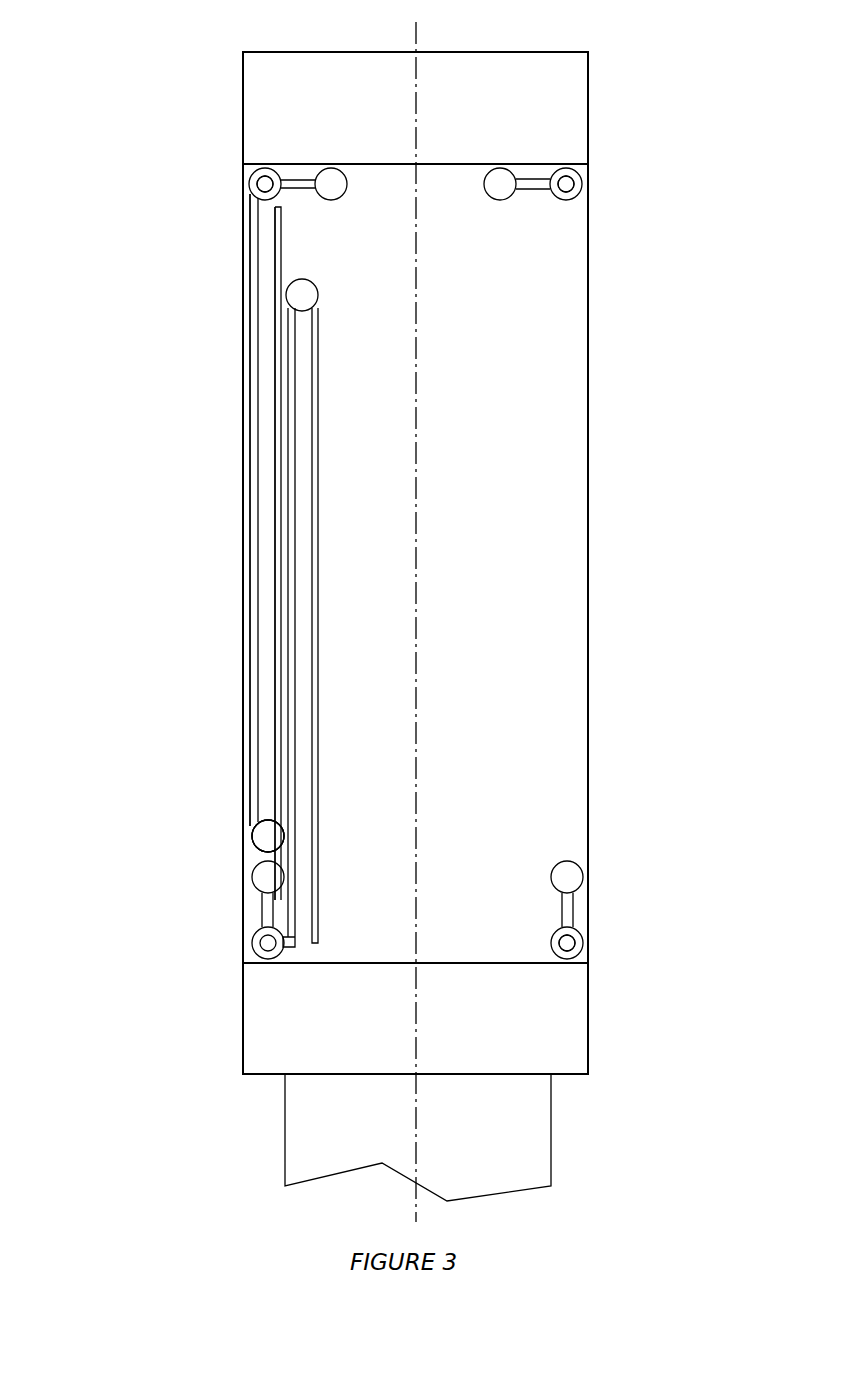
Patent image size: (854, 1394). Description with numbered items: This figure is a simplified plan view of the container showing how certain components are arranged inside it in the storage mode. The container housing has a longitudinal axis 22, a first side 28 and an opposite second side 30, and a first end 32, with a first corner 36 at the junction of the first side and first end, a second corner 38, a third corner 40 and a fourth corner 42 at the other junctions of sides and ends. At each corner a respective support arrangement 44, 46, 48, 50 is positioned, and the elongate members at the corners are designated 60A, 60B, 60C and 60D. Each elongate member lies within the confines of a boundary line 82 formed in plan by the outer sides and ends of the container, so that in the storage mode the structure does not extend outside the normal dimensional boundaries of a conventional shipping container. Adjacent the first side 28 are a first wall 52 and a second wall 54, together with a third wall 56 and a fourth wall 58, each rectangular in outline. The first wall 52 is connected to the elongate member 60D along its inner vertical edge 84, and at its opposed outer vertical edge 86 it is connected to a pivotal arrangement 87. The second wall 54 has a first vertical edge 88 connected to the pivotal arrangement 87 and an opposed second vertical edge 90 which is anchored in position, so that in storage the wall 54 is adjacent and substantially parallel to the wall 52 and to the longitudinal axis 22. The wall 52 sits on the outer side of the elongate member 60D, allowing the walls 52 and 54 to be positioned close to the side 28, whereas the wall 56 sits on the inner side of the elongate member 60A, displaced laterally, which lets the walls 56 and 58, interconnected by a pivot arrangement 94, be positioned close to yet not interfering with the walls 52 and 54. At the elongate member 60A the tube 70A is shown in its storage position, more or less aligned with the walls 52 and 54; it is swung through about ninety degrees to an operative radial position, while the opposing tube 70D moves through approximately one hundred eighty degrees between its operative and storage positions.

The longitudinal axis 22 is at (417, 62).
The first side 28 is at (138, 568).
The second side 30 is at (658, 436).
The first end 32 is at (297, 1215).
The first corner 36 is at (245, 953).
The second corner 38 is at (590, 964).
The third corner 40 is at (588, 168).
The fourth corner 42 is at (255, 184).
The support arrangement 44 is at (196, 939).
The support arrangement 46 is at (596, 943).
The support arrangement 48 is at (604, 183).
The support arrangement 50 is at (269, 148).
The first wall 52 is at (247, 270).
The second wall 54 is at (275, 397).
The third wall 56 is at (290, 692).
The fourth wall 58 is at (312, 636).
The elongate member 60A is at (268, 945).
The elongate member 60B is at (590, 940).
The elongate member 60C is at (583, 188).
The elongate member 60D is at (250, 172).
The tube 70A is at (268, 878).
The tube 70D is at (332, 184).
The boundary line 82 is at (512, 163).
The inner vertical edge 84 is at (255, 188).
The outer vertical edge 86 is at (250, 824).
The pivotal arrangement 87 is at (272, 838).
The first vertical edge 88 is at (273, 836).
The second vertical edge 90 is at (278, 205).
The pivot arrangement 94 is at (304, 292).